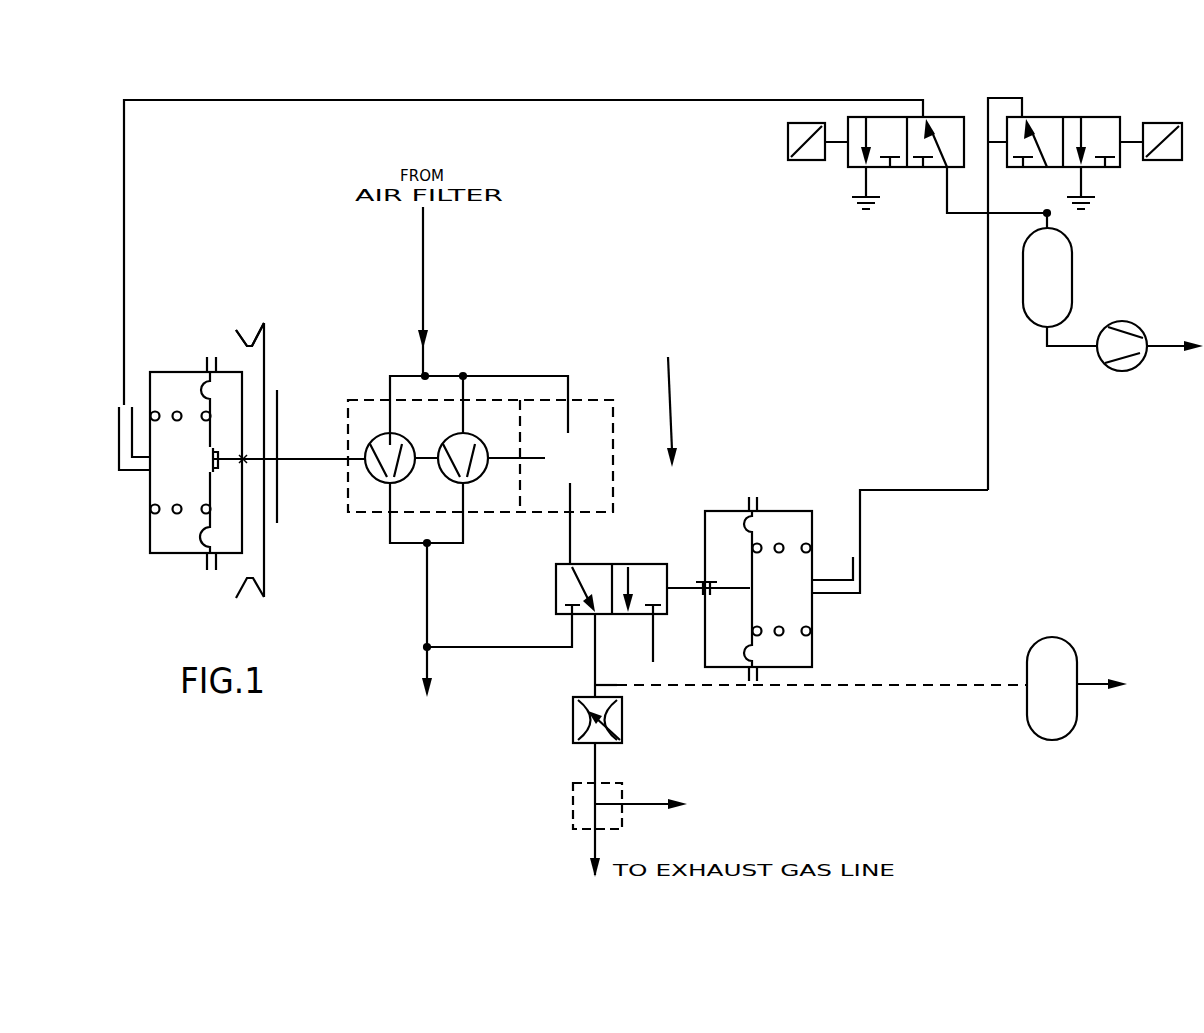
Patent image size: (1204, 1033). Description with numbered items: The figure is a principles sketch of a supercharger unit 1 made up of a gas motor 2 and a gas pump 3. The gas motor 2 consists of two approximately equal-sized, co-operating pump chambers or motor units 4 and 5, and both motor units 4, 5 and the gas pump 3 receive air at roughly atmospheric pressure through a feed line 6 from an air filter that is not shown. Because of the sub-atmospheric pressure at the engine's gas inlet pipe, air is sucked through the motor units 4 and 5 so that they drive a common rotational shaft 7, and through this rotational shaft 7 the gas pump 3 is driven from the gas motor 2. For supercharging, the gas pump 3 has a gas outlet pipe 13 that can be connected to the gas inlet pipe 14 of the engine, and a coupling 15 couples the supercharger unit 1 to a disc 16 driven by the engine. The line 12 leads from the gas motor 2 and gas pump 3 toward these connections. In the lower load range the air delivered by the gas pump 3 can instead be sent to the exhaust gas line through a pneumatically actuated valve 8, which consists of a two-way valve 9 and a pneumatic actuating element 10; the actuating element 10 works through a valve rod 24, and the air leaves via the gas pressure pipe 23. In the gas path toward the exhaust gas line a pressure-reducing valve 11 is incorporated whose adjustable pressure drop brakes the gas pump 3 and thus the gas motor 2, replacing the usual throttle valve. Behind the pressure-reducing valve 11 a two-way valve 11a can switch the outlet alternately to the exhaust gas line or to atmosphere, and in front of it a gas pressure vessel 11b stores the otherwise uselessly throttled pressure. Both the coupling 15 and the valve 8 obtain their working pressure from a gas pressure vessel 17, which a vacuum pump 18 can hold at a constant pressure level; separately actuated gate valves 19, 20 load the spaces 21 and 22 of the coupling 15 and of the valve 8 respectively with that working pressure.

The supercharger unit 1 is at (540, 340).
The gas motor 2 is at (505, 458).
The gas pump 3 is at (595, 400).
The motor unit 4 is at (378, 436).
The motor unit 5 is at (478, 437).
The feed line 6 is at (420, 342).
The rotational shaft 7 is at (519, 400).
The pneumatically actuated valve 8 is at (670, 398).
The two-way valve 9 is at (660, 620).
The pneumatic actuating element 10 is at (803, 511).
The pressure-reducing valve 11 is at (620, 730).
The two-way valve 11a is at (573, 802).
The gas pressure vessel 11b is at (1057, 663).
The delivery line 12 is at (427, 580).
The gas outlet pipe 13 is at (493, 647).
The gas inlet pipe 14 is at (425, 668).
The coupling 15 is at (252, 312).
The disc 16 is at (236, 330).
The gas pressure vessel 17 is at (1023, 268).
The vacuum pump 18 is at (1103, 358).
The gate valve 19 is at (848, 170).
The gate valve 20 is at (1012, 168).
The space 21 is at (165, 392).
The space 22 is at (771, 563).
The gas pressure pipe 23 is at (593, 657).
The valve rod 24 is at (680, 587).